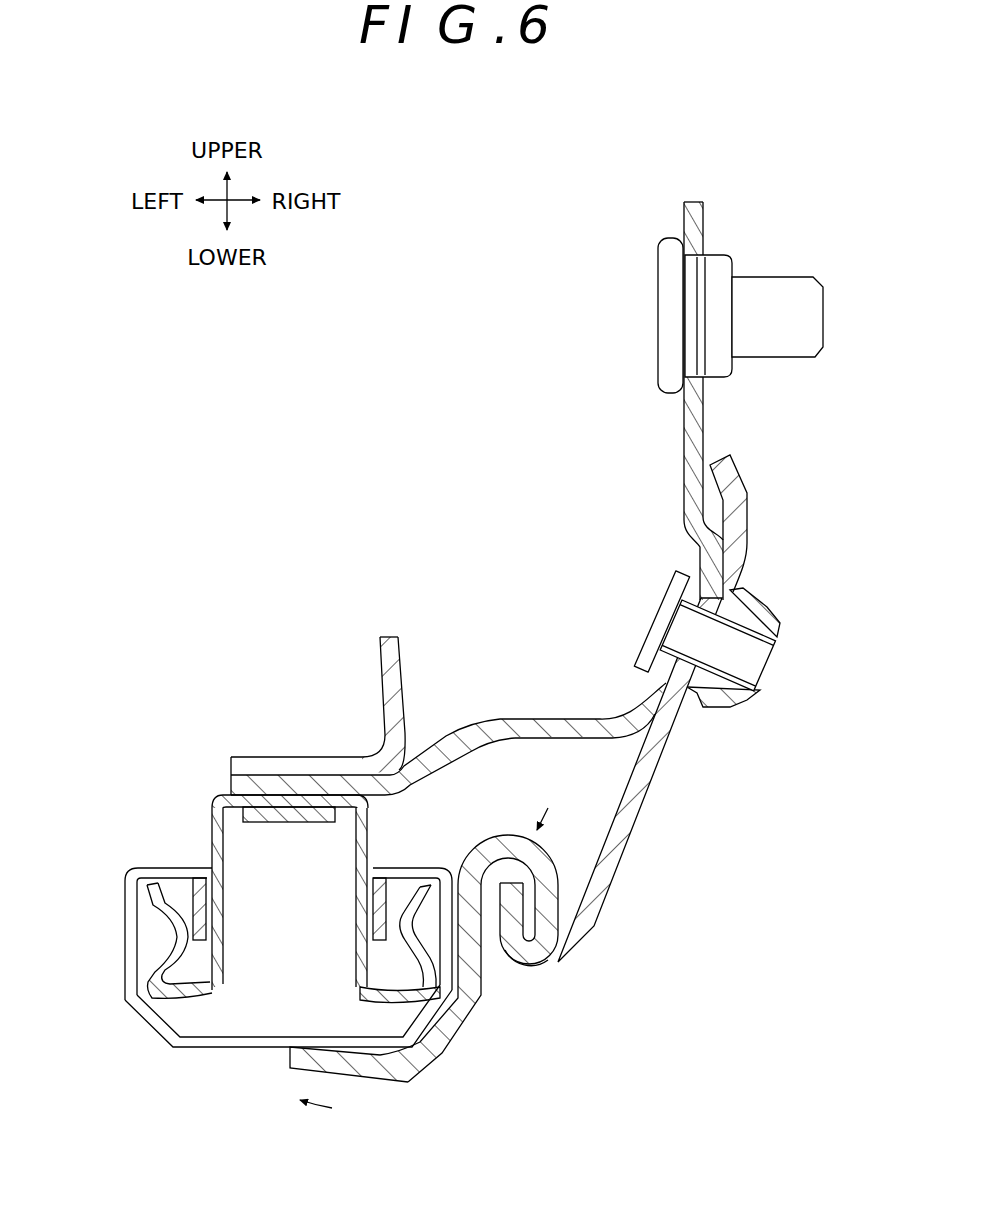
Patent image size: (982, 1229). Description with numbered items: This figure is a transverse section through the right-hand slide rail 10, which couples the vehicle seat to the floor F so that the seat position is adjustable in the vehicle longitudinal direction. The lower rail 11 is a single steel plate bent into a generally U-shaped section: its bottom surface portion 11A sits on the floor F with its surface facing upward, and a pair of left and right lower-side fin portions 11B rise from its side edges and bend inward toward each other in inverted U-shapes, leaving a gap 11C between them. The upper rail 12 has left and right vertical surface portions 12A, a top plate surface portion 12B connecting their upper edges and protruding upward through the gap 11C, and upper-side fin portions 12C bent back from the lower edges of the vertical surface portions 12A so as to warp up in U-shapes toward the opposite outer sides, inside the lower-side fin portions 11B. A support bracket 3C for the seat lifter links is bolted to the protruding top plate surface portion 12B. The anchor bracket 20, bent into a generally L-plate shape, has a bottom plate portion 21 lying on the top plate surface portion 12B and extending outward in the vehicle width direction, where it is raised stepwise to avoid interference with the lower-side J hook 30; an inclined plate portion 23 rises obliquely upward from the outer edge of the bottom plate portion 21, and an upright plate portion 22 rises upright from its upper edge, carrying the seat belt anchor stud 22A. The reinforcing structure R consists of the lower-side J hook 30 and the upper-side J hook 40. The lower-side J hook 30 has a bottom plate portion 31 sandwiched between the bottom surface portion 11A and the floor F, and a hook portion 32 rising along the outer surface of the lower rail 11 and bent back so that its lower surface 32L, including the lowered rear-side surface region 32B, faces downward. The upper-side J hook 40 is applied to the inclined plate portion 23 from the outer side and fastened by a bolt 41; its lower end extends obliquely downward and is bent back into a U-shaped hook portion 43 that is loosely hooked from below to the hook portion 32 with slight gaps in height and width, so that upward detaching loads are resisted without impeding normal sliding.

The support bracket 3C is at (398, 690).
The slide rail 10 is at (295, 911).
The lower rail 11 is at (309, 961).
The bottom surface portion 11A is at (228, 1042).
The lower-side fin portions 11B is at (135, 975).
The gap 11C is at (200, 905).
The upper rail 12 is at (261, 850).
The vertical surface portions 12A is at (357, 878).
The top plate surface portion 12B is at (317, 800).
The upper-side fin portions 12C is at (160, 955).
The anchor bracket 20 is at (536, 498).
The bottom plate portion 21 is at (258, 785).
The upright plate portion 22 is at (697, 434).
The stud bolt (SBA) 22A is at (768, 290).
The inclined plate portion 23 is at (645, 688).
The lower-side J hook 30 is at (523, 955).
The bottom plate portion 31 is at (355, 1065).
The hook portion 32 is at (607, 904).
The lower surface 32L is at (628, 923).
The rear-side surface region 32B is at (745, 959).
The upper-side J hook 40 is at (663, 765).
The bolt 41 is at (766, 672).
The hook portion 43 is at (545, 960).
The floor F is at (326, 1110).
The reinforcing structure R is at (554, 802).